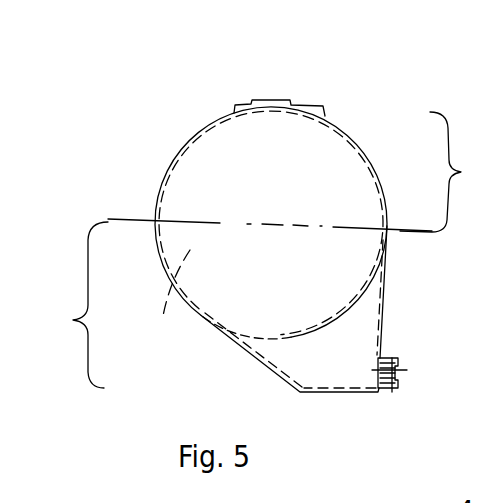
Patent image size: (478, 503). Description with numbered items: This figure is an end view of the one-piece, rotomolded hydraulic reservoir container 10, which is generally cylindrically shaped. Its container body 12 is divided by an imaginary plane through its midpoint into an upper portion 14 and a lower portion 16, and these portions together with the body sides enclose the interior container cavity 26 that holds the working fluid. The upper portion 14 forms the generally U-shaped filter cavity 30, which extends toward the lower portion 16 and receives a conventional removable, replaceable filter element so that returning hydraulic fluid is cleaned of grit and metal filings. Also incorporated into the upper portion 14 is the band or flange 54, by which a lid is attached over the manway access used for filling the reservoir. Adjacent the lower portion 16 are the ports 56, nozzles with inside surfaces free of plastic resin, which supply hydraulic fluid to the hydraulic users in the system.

The container 10 is at (419, 54).
The container body 12 is at (358, 146).
The upper portion 14 is at (439, 172).
The lower portion 16 is at (73, 305).
The interior container cavity 26 is at (166, 306).
The filter cavity 30 is at (336, 309).
The band or flange 54 is at (323, 104).
The ports 56 is at (392, 392).